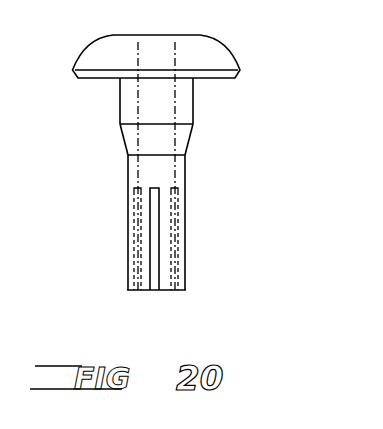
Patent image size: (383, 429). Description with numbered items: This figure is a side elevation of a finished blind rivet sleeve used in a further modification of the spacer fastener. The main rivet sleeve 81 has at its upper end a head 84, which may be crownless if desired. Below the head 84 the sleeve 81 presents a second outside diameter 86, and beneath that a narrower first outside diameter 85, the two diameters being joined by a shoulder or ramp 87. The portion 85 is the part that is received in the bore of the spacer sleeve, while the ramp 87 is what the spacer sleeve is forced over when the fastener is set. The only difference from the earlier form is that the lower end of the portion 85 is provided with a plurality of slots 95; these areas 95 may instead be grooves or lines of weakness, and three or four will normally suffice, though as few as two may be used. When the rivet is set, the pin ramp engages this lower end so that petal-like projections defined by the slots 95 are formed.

The main rivet sleeve 81 is at (188, 161).
The head 84 is at (232, 52).
The first outside diameter 85 is at (186, 222).
The second outside diameter 86 is at (194, 98).
The shoulder or ramp 87 is at (189, 135).
The slots 95 is at (154, 251).